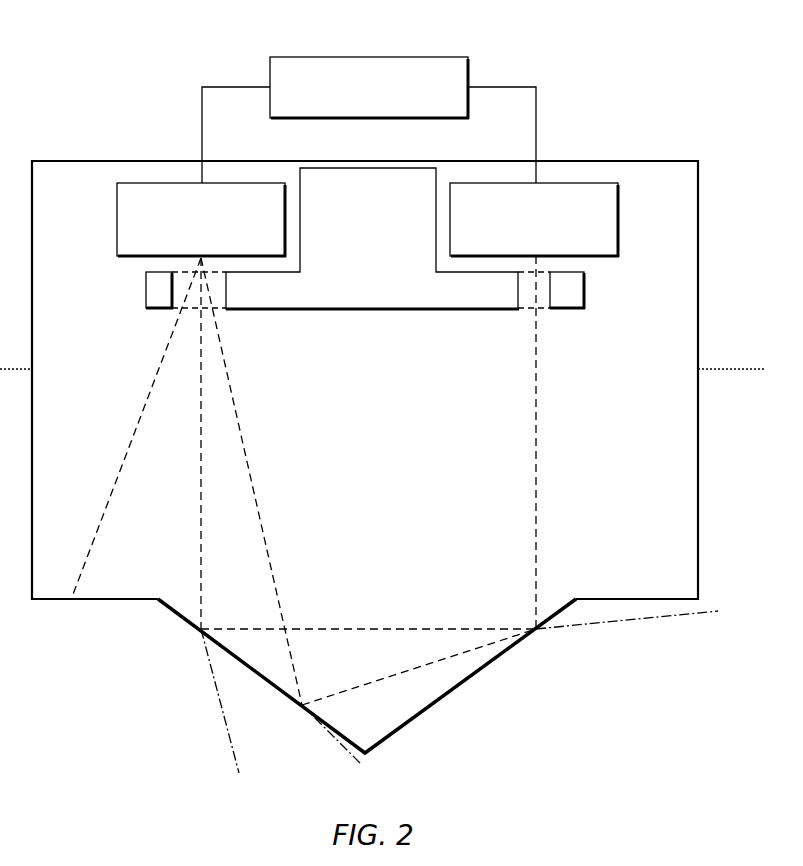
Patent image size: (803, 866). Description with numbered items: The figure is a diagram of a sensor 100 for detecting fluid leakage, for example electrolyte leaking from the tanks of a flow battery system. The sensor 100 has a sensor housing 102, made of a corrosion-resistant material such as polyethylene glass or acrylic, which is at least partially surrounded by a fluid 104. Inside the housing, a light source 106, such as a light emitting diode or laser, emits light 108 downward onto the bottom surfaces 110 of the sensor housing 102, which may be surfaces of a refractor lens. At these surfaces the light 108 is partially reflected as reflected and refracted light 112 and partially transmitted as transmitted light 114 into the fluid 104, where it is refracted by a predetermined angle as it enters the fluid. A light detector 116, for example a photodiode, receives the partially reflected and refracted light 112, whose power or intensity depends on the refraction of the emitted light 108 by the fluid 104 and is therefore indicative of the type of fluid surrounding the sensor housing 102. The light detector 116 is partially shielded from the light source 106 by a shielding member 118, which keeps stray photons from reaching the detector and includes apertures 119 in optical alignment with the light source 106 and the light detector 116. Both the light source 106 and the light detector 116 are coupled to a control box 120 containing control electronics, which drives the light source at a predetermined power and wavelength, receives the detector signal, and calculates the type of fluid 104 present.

The sensor 100 is at (82, 48).
The sensor housing 102 is at (600, 160).
The fluid 104 is at (730, 368).
The light source 106 is at (117, 217).
The light 108 is at (201, 532).
The bottom surfaces 110 is at (302, 707).
The partially reflected and refracted light 112 is at (536, 455).
The partially transmitted light 114 is at (224, 713).
The light detector 116 is at (618, 208).
The shielding member 118 is at (382, 301).
The apertures 119 is at (170, 312).
The control box 120 is at (400, 57).